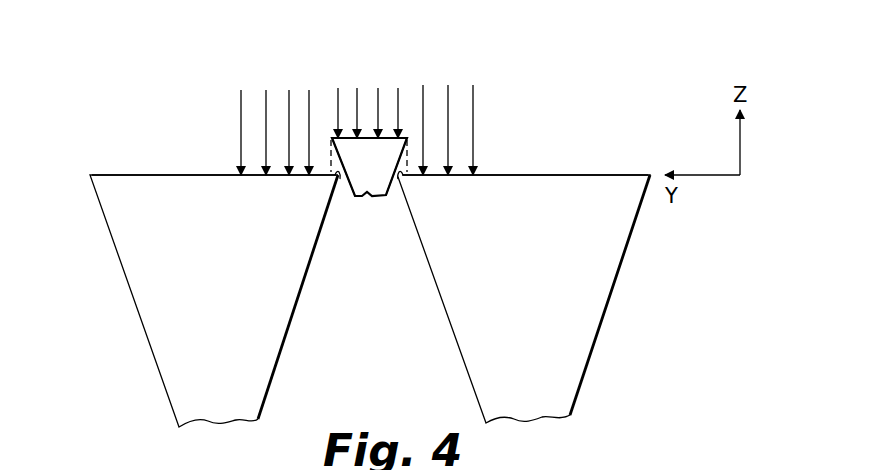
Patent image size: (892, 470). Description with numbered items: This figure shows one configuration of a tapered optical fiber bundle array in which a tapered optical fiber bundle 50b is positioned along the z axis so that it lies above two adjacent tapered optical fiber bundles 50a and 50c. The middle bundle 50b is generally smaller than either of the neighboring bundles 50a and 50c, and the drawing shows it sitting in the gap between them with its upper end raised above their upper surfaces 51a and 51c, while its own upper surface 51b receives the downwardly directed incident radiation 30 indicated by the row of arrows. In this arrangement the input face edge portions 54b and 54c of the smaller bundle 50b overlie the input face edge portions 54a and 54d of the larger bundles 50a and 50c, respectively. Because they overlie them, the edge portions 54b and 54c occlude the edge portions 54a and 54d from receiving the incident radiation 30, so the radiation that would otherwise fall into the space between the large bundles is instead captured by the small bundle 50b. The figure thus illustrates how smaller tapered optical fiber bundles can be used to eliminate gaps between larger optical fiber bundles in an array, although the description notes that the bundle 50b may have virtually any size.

The incident radiation 30 is at (287, 72).
The tapered optical fiber bundle 50a is at (272, 343).
The tapered optical fiber bundle 50b is at (368, 188).
The tapered optical fiber bundle 50c is at (470, 332).
The top surface of first block 51a is at (190, 175).
The top surface of middle portion 51b is at (370, 137).
The top surface of second block 51c is at (570, 175).
The input face edge portion 54a is at (340, 180).
The input face edge portion 54b is at (333, 137).
The input face edge portion 54c is at (407, 137).
The input face edge portion 54d is at (398, 180).